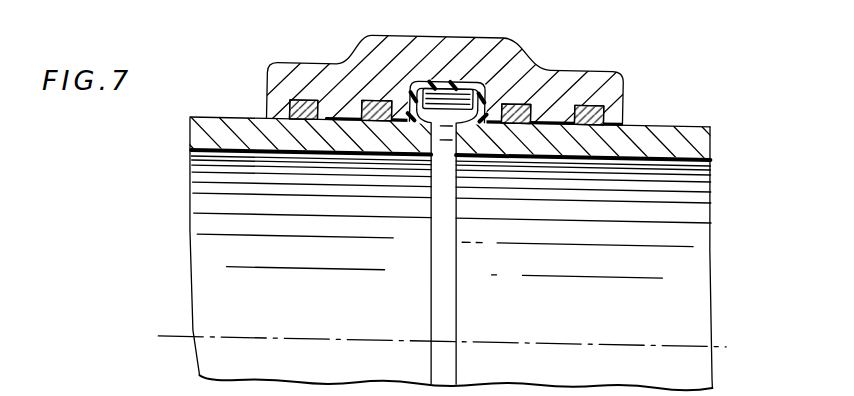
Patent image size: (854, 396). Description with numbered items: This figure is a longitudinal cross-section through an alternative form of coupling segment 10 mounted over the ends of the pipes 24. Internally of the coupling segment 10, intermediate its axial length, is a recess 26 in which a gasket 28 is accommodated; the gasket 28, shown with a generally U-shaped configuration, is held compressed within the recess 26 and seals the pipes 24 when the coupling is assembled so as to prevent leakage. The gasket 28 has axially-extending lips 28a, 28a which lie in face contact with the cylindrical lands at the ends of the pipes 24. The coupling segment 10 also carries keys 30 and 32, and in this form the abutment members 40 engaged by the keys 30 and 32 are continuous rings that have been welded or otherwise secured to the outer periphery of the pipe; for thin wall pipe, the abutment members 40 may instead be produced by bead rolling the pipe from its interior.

The coupling segment 10 is at (372, 41).
The pipe 24 is at (220, 122).
The recess 26 is at (467, 88).
The gasket 28 is at (500, 98).
The axially-extending lip 28a is at (413, 152).
The key 30 is at (341, 153).
The key 32 is at (280, 150).
The abutment member 40 is at (300, 103).